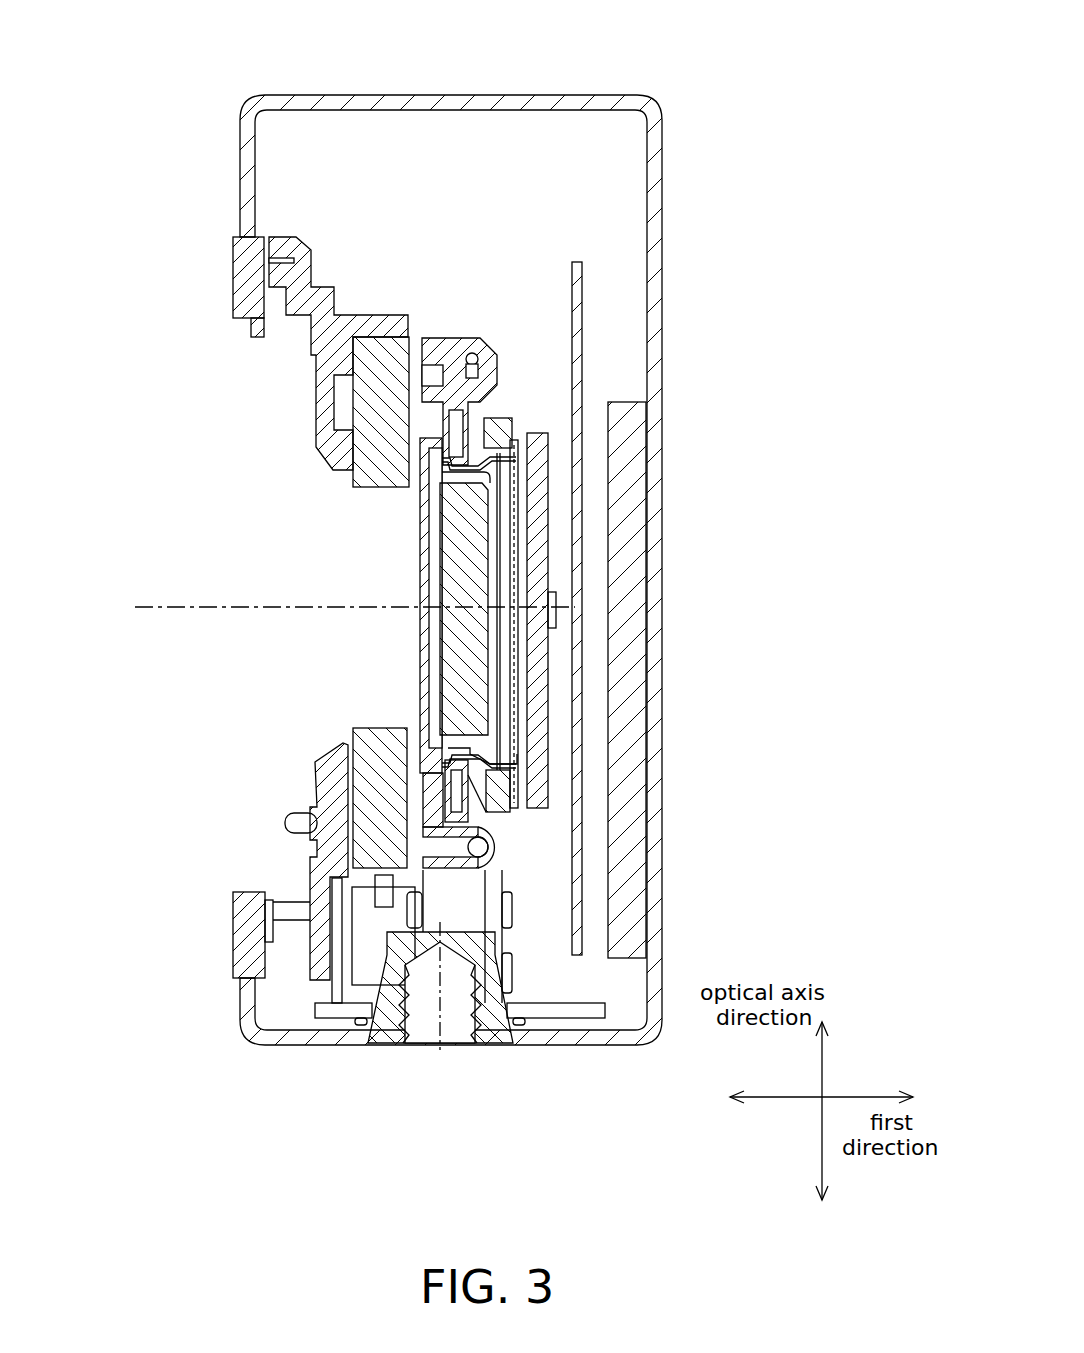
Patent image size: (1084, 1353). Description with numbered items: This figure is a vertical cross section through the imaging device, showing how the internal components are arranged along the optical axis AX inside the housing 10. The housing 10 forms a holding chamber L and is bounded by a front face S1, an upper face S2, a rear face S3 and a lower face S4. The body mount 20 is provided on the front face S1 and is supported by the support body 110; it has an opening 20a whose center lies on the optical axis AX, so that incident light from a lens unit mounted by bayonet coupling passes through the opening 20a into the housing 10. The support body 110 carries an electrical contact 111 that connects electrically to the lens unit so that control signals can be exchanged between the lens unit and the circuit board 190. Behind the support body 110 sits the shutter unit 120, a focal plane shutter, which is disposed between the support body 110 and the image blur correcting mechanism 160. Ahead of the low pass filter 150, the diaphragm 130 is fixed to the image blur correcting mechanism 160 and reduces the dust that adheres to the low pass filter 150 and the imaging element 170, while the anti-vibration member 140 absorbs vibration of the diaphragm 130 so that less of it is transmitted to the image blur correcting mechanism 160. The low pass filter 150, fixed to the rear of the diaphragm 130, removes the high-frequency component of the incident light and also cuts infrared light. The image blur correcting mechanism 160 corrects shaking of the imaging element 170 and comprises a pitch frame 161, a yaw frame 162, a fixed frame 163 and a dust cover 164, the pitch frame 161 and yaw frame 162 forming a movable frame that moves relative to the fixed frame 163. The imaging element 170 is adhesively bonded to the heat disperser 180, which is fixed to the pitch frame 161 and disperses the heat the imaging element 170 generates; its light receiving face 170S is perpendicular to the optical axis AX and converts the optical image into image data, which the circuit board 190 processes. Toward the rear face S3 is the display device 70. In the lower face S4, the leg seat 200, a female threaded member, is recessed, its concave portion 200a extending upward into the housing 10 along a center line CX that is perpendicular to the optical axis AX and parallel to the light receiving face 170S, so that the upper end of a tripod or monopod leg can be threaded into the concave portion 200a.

The housing 10 is at (250, 183).
The body mount 20 is at (248, 253).
The opening 20a is at (232, 546).
The display device 70 is at (620, 428).
The support body 110 is at (298, 308).
The electrical contact 111 is at (290, 826).
The shutter unit 120 is at (370, 372).
The diaphragm 130 is at (425, 708).
The anti-vibration member 140 is at (425, 438).
The low pass filter 150 is at (455, 672).
The image blur correcting mechanism 160 is at (630, 821).
The pitch frame 161 is at (470, 790).
The yaw frame 162 is at (470, 828).
The fixed frame 163 is at (475, 875).
The dust cover 164 is at (507, 750).
The imaging element 170 is at (538, 565).
The light receiving face 170S is at (509, 664).
The heat disperser 180 is at (530, 522).
The circuit board 190 is at (577, 477).
The leg seat 200 is at (384, 1048).
The concave portion 200a is at (470, 1020).
The optical axis AX is at (160, 606).
The center line CX is at (440, 1050).
The holding chamber L is at (452, 139).
The front face S1 is at (228, 146).
The upper face S2 is at (549, 92).
The rear face S3 is at (678, 261).
The lower face S4 is at (608, 1062).